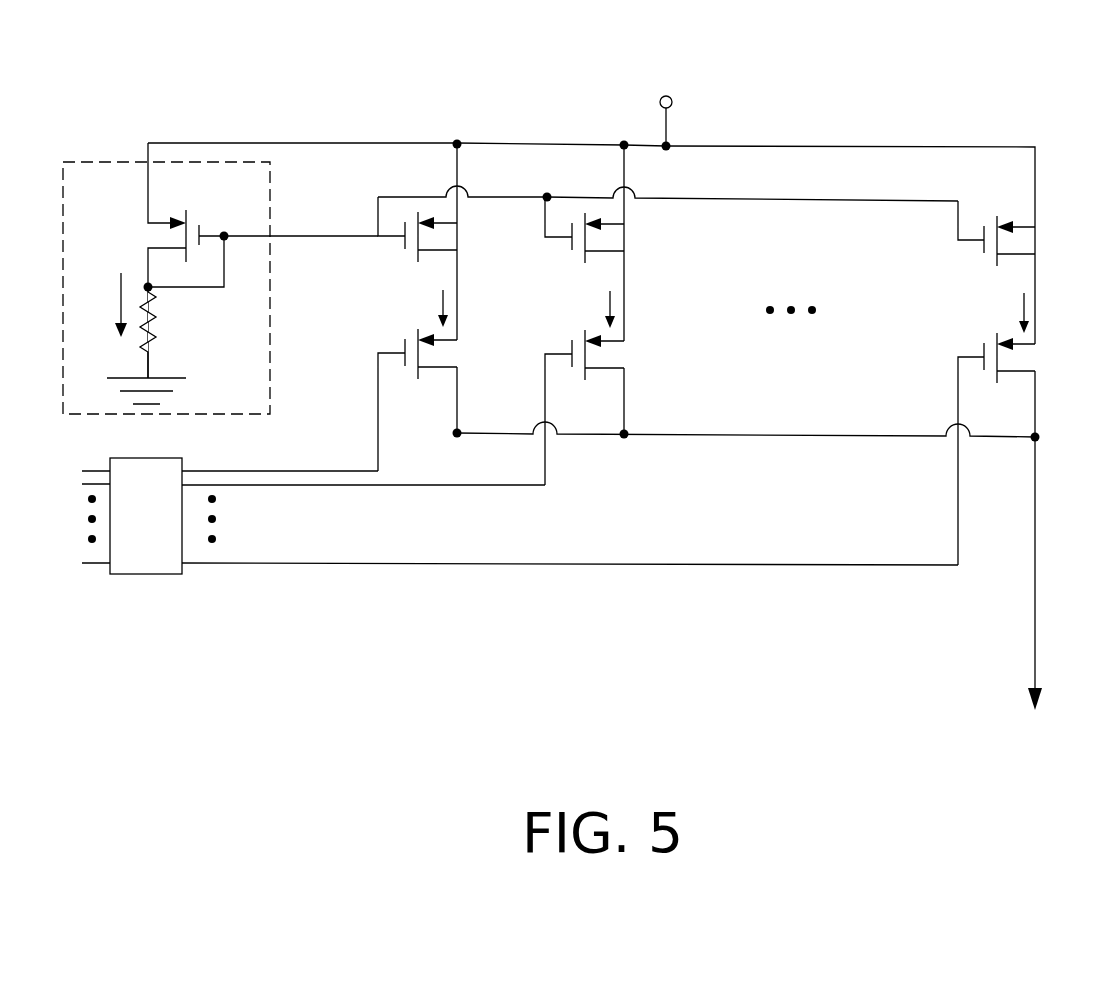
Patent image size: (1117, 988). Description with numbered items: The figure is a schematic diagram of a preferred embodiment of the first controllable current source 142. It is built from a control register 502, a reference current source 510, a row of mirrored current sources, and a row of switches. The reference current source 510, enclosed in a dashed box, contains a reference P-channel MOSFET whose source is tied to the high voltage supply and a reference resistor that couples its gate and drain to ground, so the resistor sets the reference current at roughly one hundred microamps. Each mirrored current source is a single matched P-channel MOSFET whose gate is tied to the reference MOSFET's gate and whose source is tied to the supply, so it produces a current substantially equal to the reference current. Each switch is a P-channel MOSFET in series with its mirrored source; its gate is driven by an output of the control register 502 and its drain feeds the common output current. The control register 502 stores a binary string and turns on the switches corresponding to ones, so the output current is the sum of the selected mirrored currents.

The first controllable current source 142 is at (831, 28).
The control register 502 is at (157, 458).
The reference current source 510 is at (255, 193).